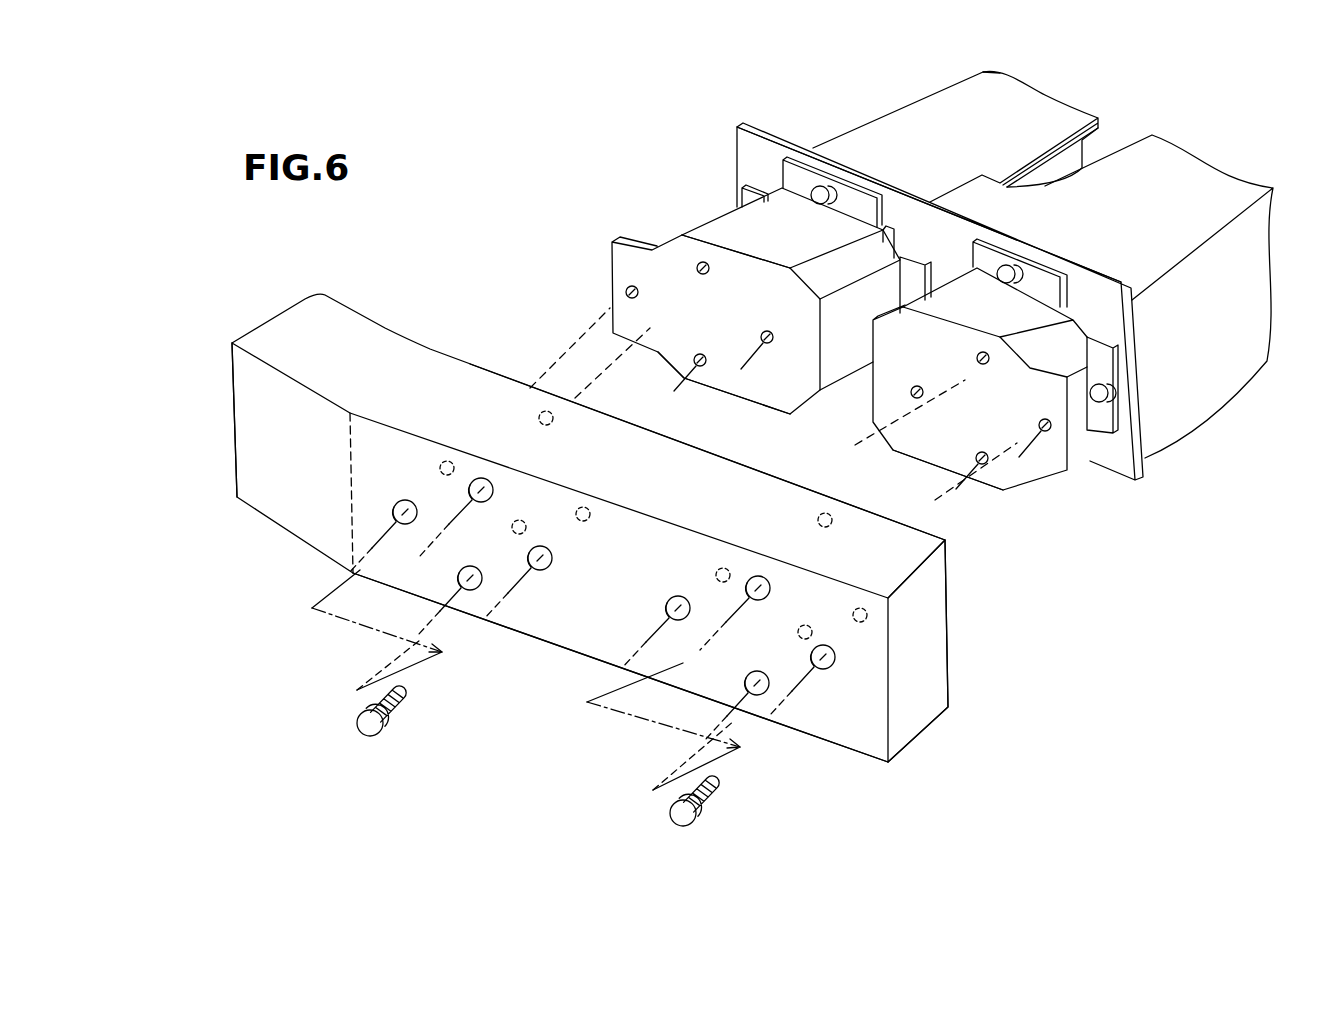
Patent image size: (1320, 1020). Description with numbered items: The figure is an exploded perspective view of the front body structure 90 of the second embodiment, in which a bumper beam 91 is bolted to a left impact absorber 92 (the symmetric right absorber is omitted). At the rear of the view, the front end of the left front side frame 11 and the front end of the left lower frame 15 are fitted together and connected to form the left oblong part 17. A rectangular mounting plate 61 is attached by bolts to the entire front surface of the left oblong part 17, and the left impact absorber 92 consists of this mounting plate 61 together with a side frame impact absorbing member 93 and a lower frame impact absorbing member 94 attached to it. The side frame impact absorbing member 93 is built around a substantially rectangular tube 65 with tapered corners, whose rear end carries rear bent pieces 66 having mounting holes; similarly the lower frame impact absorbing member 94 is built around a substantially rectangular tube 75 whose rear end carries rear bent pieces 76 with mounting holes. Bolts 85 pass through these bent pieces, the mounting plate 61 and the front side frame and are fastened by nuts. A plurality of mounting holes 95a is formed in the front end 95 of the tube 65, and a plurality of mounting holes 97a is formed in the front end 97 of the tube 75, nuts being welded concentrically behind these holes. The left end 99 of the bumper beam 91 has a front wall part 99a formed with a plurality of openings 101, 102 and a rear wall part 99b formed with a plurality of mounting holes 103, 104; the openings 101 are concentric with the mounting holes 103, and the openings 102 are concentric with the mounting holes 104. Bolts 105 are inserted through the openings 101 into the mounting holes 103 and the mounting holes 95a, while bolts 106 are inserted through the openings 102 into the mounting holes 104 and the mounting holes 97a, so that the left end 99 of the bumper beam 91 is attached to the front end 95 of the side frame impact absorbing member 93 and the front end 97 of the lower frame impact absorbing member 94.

The left front side frame 11 is at (956, 71).
The left lower frame 15 is at (1222, 174).
The left oblong part 17 is at (903, 128).
The mounting plate 61 is at (752, 154).
The tube 65 is at (707, 236).
The rear bent pieces 66 is at (797, 175).
The tube 75 is at (1075, 365).
The rear bent pieces 76 is at (1042, 275).
The bolts 85 is at (812, 200).
The front body structure 90 is at (537, 82).
The bumper beam 91 is at (247, 526).
The left impact absorber 92 is at (588, 201).
The side frame impact absorbing member 93 is at (721, 199).
The lower frame impact absorbing member 94 is at (1060, 330).
The front end of tube 65 95 is at (700, 332).
The mounting holes 95a is at (698, 266).
The front end of tube 75 97 is at (958, 432).
The mounting holes 97a is at (916, 386).
The left end of bumper beam 99 is at (832, 727).
The front wall part 99a is at (598, 620).
The rear wall part 99b is at (925, 612).
The openings 101 is at (469, 488).
The openings 102 is at (756, 590).
The mounting holes 103 is at (450, 461).
The mounting holes 104 is at (728, 570).
The bolts 105 is at (356, 724).
The bolts 106 is at (700, 825).